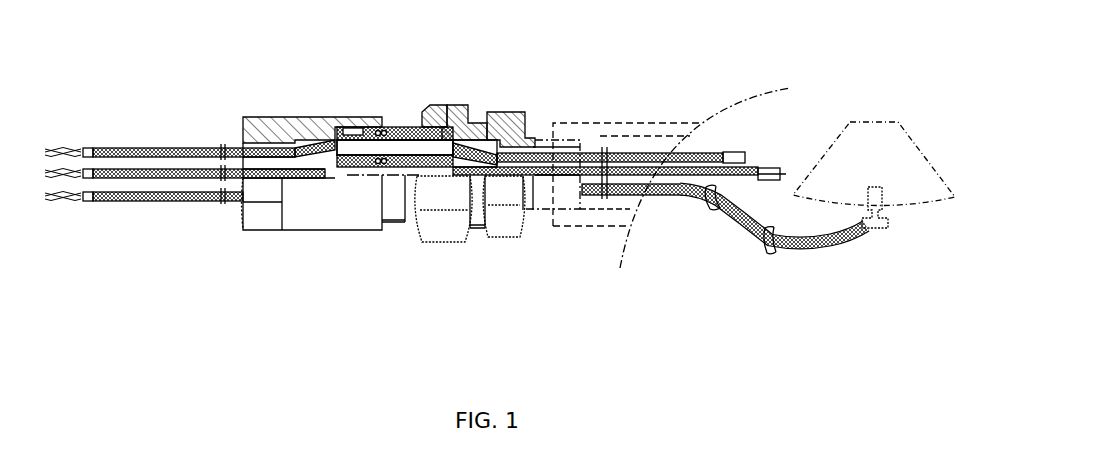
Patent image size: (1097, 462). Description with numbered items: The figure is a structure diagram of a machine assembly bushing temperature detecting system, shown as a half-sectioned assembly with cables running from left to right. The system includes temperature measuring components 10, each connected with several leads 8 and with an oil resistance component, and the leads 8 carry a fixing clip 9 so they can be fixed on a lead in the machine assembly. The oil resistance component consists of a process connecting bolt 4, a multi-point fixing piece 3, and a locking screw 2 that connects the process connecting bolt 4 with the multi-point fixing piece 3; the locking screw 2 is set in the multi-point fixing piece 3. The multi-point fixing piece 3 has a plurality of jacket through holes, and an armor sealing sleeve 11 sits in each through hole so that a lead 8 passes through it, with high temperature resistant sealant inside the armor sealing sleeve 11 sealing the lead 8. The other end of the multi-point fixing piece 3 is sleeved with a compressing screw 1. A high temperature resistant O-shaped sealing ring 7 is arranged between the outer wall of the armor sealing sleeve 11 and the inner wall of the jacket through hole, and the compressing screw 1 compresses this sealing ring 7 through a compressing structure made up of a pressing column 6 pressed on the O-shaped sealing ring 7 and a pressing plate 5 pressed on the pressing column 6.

The compressing screw 1 is at (282, 123).
The locking screw 2 is at (462, 112).
The multi-point fixing piece 3 is at (422, 105).
The process connecting bolt 4 is at (513, 115).
The pressing plate 5 is at (342, 127).
The pressing column 6 is at (357, 127).
The high temperature resistant O-shaped sealing ring 7 is at (388, 127).
The lead 8 is at (200, 150).
The fixing clip 9 is at (768, 253).
The temperature measuring component 10 is at (735, 152).
The armor sealing sleeve 11 is at (332, 143).